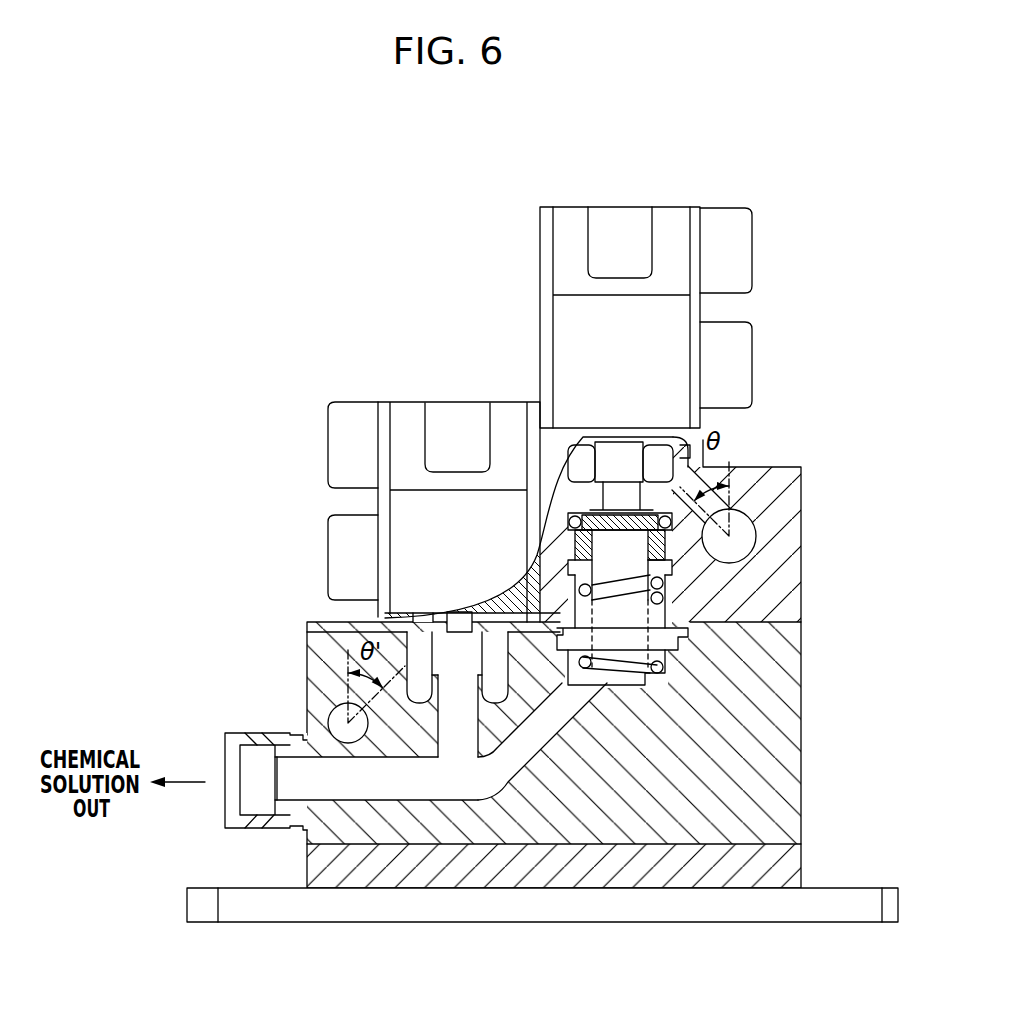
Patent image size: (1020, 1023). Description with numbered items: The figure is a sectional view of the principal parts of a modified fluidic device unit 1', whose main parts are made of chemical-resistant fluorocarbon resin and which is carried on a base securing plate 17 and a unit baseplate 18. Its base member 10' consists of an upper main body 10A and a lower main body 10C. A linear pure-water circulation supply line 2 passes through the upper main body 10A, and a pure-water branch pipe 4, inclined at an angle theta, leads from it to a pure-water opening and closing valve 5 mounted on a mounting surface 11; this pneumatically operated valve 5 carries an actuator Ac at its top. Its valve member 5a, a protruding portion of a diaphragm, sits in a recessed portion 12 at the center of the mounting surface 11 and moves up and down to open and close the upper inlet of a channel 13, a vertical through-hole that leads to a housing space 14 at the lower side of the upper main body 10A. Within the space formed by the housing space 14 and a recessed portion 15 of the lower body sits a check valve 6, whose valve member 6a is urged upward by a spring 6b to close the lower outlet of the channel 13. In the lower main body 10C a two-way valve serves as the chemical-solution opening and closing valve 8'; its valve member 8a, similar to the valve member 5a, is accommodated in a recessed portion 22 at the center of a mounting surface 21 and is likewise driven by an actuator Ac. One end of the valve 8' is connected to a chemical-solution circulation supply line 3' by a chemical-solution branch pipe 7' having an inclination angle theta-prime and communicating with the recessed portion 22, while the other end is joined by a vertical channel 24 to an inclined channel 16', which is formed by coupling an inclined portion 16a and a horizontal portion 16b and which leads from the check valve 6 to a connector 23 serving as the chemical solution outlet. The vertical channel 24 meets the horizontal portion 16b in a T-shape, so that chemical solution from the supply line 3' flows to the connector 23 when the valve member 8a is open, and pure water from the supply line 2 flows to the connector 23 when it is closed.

The fluidic device unit 1' is at (542, 494).
The pure-water circulation supply line 2 is at (745, 540).
The chemical-solution circulation supply line 3' is at (308, 722).
The pure-water branch pipe 4 is at (717, 503).
The pure-water opening and closing valve 5 is at (680, 338).
The valve member 5a is at (609, 456).
The check valve 6 is at (562, 562).
The valve member 6a is at (583, 544).
The spring 6b is at (658, 672).
The chemical-solution branch pipe 7' is at (356, 751).
The chemical-solution opening and closing valve 8' is at (409, 512).
The valve member 8a is at (458, 632).
The base member 10' is at (599, 648).
The upper main body 10A is at (805, 612).
The lower main body 10C is at (803, 712).
The mounting surface 11 is at (681, 450).
The recessed portion 12 is at (656, 456).
The channel 13 is at (585, 497).
The housing space 14 is at (662, 558).
The recessed portion 15 is at (676, 650).
The inclined channel 16' is at (559, 729).
The inclined portion 16a is at (542, 762).
The horizontal portion 16b is at (345, 810).
The base securing plate 17 is at (795, 860).
The unit baseplate 18 is at (850, 903).
The mounting surface 21 is at (395, 632).
The recessed portion 22 is at (415, 700).
The connector 23 is at (228, 824).
The vertical channel 24 is at (462, 755).
The actuator Ac is at (668, 218).